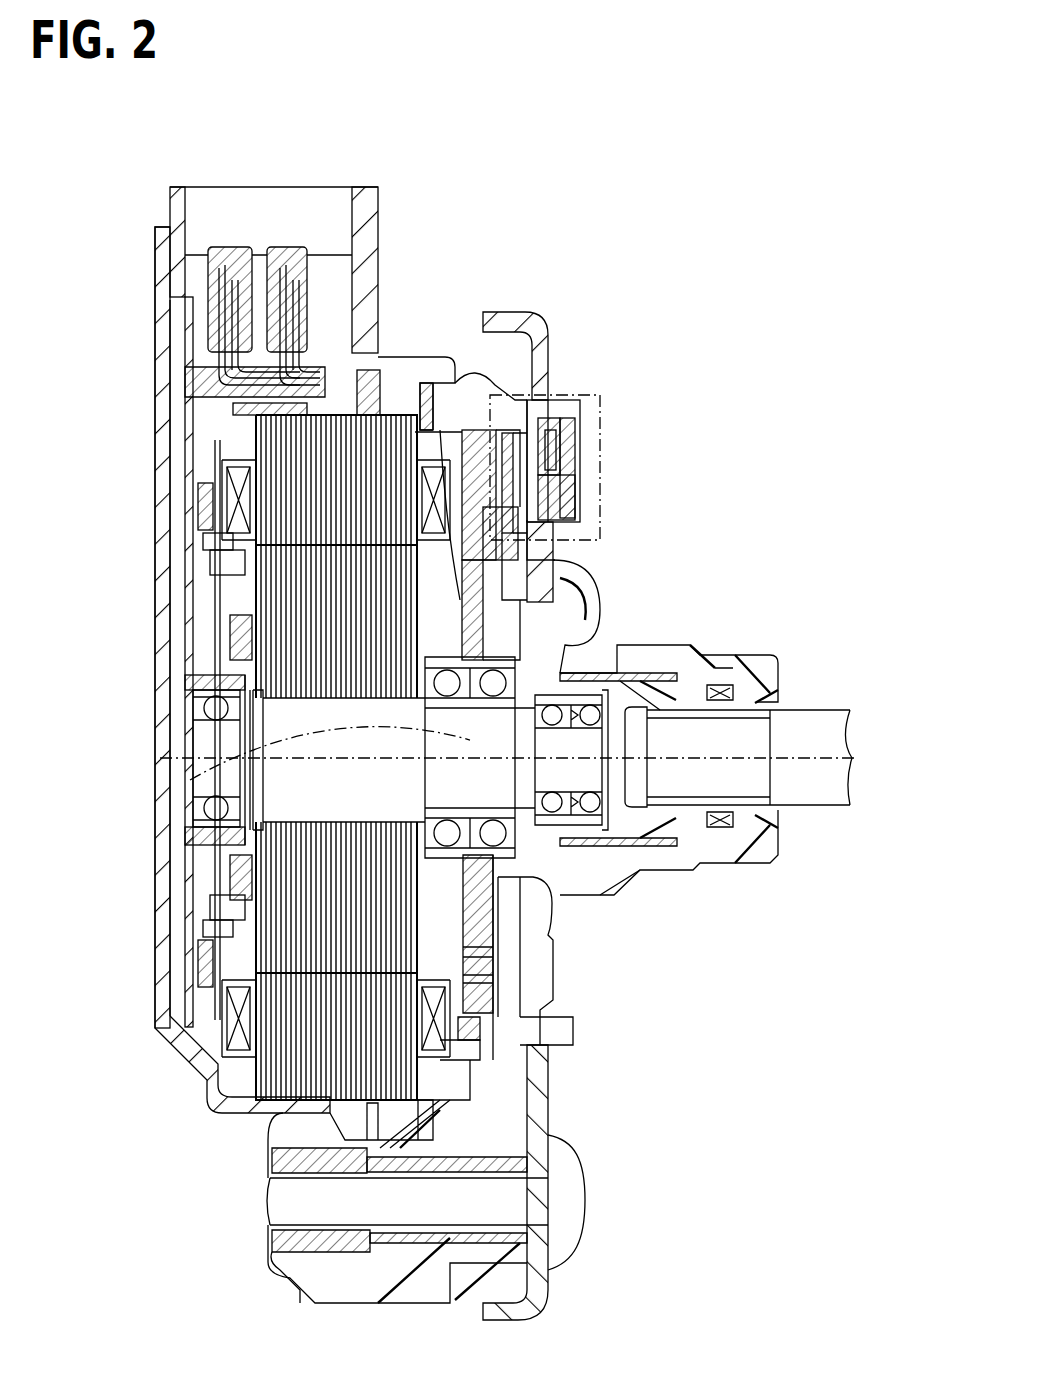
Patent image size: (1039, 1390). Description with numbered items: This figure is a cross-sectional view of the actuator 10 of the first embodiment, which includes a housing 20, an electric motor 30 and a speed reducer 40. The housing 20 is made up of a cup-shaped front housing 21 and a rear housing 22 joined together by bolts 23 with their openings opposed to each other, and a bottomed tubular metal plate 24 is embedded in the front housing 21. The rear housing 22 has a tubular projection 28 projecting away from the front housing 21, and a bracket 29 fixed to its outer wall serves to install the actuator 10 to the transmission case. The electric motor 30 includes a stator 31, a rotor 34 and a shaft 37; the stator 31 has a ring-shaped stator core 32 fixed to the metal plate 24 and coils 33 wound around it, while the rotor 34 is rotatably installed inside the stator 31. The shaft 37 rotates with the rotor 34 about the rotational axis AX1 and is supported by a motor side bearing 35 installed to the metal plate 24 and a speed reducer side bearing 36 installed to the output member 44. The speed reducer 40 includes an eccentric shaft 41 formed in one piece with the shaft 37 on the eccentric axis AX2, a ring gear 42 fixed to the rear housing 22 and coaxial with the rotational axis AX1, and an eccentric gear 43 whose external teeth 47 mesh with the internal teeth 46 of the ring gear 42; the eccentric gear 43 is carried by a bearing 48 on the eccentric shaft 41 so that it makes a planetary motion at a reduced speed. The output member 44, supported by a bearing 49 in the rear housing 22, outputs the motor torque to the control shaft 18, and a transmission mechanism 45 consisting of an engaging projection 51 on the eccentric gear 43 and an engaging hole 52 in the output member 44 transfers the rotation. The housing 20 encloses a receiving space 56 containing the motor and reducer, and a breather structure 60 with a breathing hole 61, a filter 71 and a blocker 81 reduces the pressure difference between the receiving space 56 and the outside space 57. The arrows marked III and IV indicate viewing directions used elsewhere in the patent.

The actuator 10 is at (165, 183).
The control shaft 18 is at (790, 798).
The housing 20 is at (354, 745).
The front housing 21 is at (345, 405).
The rear housing 22 is at (435, 383).
The bolts 23 is at (565, 1197).
The metal plate 24 is at (175, 1062).
The tubular projection 28 is at (740, 870).
The bracket 29 is at (540, 1283).
The electric motor 30 is at (249, 748).
The stator 31 is at (238, 505).
The stator core 32 is at (253, 440).
The coils 33 is at (228, 470).
The rotor 34 is at (256, 735).
The motor side bearing 35 is at (200, 808).
The speed reducer side bearing 36 is at (590, 810).
The shaft 37 is at (200, 838).
The speed reducer 40 is at (230, 641).
The eccentric shaft 41 is at (480, 740).
The ring gear 42 is at (455, 432).
The eccentric gear 43 is at (545, 955).
The output member 44 is at (720, 685).
The transmission mechanism 45 is at (596, 596).
The internal teeth 46 is at (525, 1032).
The external teeth 47 is at (545, 1005).
The bearing 48 is at (565, 905).
The bearing 49 is at (720, 830).
The engaging projection 51 is at (560, 548).
The engaging hole 52 is at (575, 600).
The receiving space 56 is at (140, 640).
The outside space 57 is at (718, 480).
The breather structure 60 is at (575, 450).
The breathing hole 61 is at (565, 500).
The filter 71 is at (556, 460).
The blocker 81 is at (560, 428).
The rotational axis AX1 is at (190, 785).
The eccentric axis AX2 is at (190, 748).
The view direction III is at (815, 689).
The view direction IV is at (600, 395).